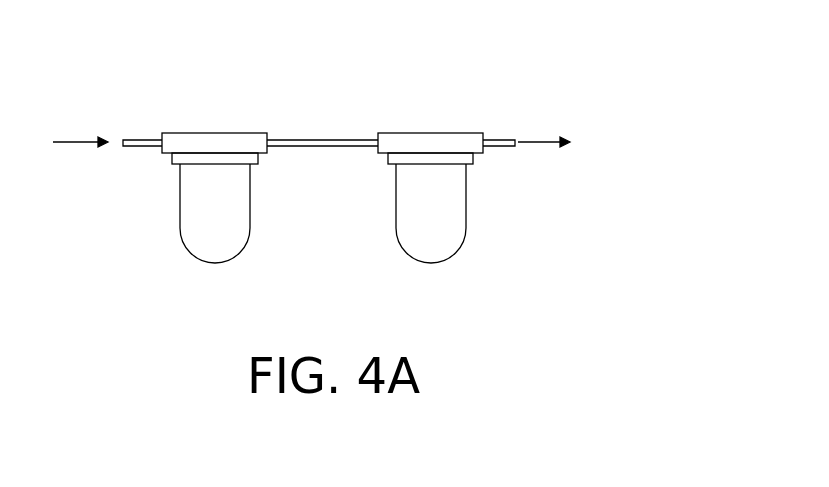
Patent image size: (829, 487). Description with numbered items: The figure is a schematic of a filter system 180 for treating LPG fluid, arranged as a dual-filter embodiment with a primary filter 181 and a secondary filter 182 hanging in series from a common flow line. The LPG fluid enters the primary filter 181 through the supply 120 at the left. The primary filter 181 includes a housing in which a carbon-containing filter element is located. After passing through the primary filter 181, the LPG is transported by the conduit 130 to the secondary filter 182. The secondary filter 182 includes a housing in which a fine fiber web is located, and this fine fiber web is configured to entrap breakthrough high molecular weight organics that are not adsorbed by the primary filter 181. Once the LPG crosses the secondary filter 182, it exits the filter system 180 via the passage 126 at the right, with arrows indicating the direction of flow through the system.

The supply 120 is at (155, 147).
The passage 126 is at (490, 147).
The conduit 130 is at (335, 147).
The filter system 180 is at (385, 83).
The primary filter 181 is at (207, 263).
The secondary filter 182 is at (422, 263).